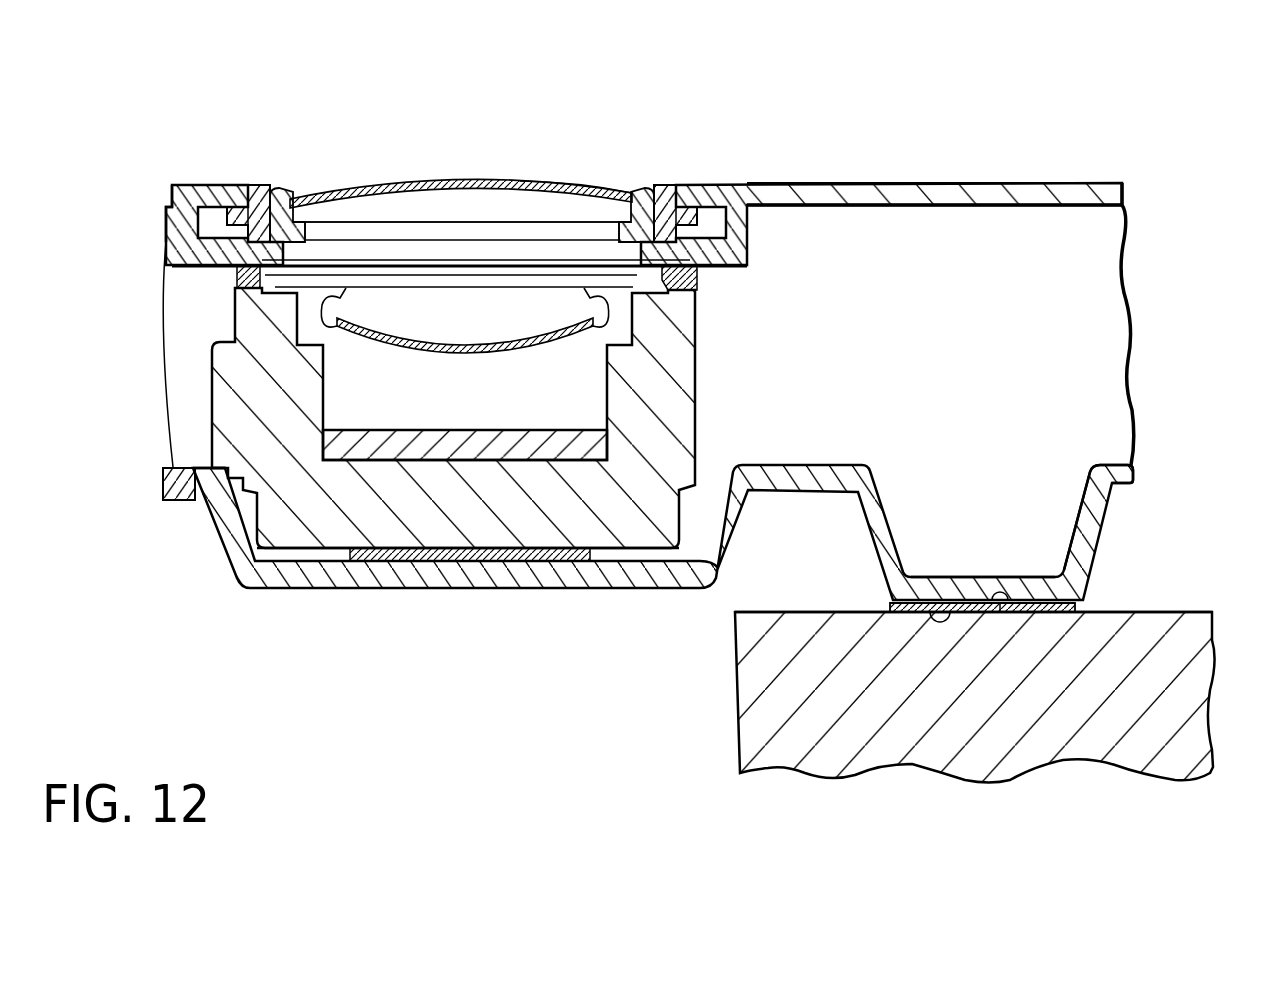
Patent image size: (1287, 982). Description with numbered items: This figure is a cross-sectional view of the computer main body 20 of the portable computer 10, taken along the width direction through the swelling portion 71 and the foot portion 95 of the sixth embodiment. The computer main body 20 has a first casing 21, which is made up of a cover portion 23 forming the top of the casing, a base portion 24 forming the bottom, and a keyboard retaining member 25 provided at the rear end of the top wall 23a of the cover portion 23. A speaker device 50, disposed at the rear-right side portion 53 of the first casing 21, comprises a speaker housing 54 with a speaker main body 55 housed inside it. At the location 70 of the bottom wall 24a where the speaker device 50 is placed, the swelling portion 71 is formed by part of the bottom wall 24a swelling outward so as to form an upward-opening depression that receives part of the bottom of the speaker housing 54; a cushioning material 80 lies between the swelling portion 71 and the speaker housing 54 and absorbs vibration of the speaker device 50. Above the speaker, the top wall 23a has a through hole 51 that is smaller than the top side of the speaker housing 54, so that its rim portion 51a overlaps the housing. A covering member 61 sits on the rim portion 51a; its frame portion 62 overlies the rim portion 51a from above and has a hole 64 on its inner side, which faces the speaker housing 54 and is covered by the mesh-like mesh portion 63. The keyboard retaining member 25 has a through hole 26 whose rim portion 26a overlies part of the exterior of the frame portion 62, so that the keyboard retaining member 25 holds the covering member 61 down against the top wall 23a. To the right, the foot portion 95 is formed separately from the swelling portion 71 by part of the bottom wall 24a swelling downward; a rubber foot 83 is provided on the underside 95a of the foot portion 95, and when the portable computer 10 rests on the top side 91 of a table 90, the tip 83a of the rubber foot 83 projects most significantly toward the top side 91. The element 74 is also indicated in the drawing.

The portable computer 10 is at (172, 340).
The computer main body 20 is at (174, 408).
The first casing 21 is at (997, 183).
The cover portion 23 is at (1065, 182).
The top wall 23a is at (843, 183).
The base portion 24 is at (1097, 545).
The bottom wall 24a is at (1095, 585).
The keyboard retaining member 25 is at (185, 182).
The through hole 26 is at (255, 186).
The rim portion 26a is at (238, 186).
The speaker device 50 is at (308, 522).
The through hole 51 is at (400, 222).
The rim portion 51a is at (327, 190).
The rear-right side portion 53 is at (197, 454).
The speaker housing 54 is at (400, 540).
The speaker main body 55 is at (473, 462).
The covering member 61 is at (455, 180).
The frame portion 62 is at (283, 186).
The mesh portion 63 is at (545, 181).
The hole 64 is at (452, 215).
The location 70 is at (609, 572).
The swelling portion 71 is at (559, 570).
The hook portion 74 is at (245, 578).
The cushioning material 80 is at (235, 272).
The rubber foot 83 is at (1058, 613).
The tip 83a is at (1007, 613).
The table 90 is at (1200, 748).
The top side 91 is at (1208, 612).
The foot portion 95 is at (1103, 497).
The underside 95a is at (947, 618).